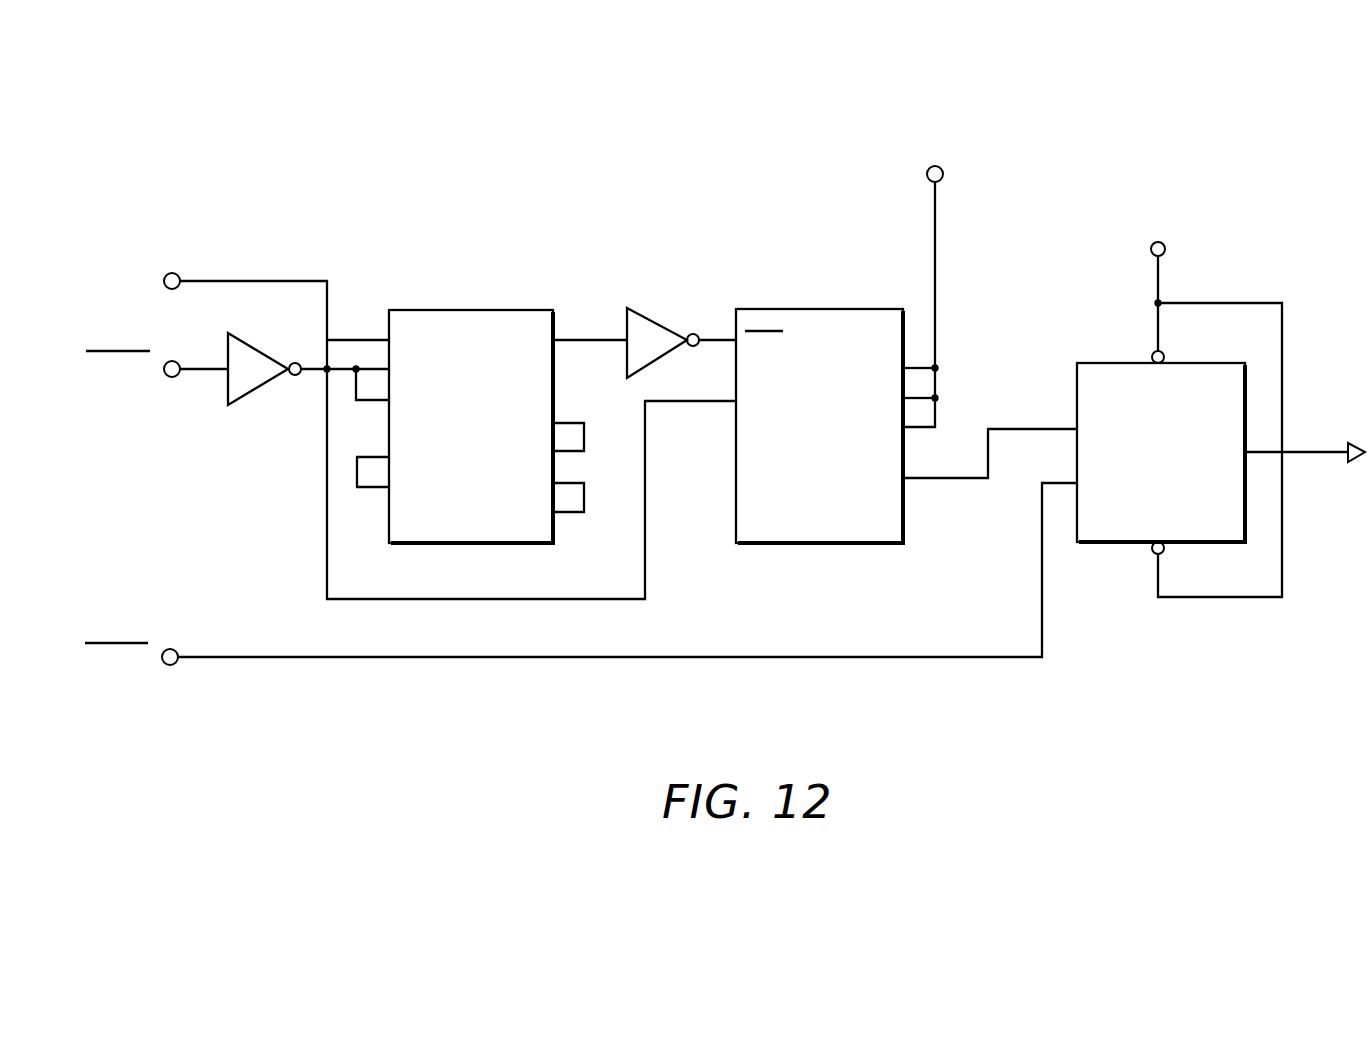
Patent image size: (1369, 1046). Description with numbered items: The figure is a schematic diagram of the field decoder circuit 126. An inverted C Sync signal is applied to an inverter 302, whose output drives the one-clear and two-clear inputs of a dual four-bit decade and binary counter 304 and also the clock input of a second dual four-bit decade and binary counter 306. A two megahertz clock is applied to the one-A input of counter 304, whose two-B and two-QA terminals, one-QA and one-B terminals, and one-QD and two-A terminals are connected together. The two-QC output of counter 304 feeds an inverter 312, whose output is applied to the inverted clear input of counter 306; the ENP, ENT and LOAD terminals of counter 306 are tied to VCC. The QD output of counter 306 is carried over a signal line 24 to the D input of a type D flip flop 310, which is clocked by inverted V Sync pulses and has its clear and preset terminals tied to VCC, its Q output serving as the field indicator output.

The field decoder circuit 126 is at (430, 143).
The inverter 302 is at (250, 347).
The dual 4-bit decade and binary counter 304 is at (532, 309).
The second dual 4-bit decade and binary counter 306 is at (794, 309).
The type D flip flop 310 is at (1111, 362).
The inverter 312 is at (661, 361).
The signal line 24 is at (946, 480).